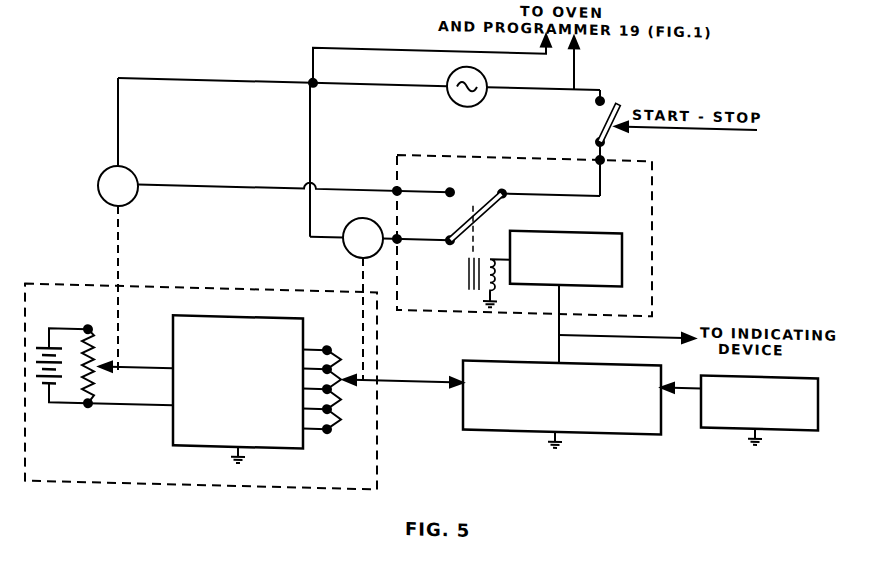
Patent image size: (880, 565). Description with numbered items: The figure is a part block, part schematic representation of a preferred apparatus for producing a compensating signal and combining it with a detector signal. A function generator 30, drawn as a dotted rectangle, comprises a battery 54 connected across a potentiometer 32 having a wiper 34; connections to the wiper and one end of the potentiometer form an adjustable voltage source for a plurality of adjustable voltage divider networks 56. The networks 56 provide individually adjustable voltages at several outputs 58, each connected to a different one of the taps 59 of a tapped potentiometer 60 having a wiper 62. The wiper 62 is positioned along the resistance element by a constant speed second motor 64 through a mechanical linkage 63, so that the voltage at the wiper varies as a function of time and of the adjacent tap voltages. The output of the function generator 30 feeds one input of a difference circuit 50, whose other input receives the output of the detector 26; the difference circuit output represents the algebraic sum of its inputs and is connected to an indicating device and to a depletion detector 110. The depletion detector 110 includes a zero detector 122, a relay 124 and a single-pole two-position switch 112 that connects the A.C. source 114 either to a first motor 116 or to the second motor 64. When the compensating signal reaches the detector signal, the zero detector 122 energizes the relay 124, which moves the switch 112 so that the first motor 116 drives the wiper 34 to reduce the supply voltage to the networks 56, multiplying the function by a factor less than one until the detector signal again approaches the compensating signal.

The first motor 116 is at (133, 182).
The A.C. source 114 is at (467, 106).
The single-pole two-position switch 112 is at (480, 180).
The second motor 64 is at (352, 224).
The mechanical linkage 63 is at (362, 290).
The zero detector 122 is at (573, 229).
The relay 124 is at (494, 293).
The depletion detector 110 is at (652, 236).
The battery 54 is at (45, 356).
The wiper 34 is at (116, 375).
The potentiometer 32 is at (92, 414).
The adjustable voltage divider networks 56 is at (222, 322).
The outputs 58 is at (318, 352).
The taps 59 is at (334, 402).
The tapped potentiometer 60 is at (314, 434).
The wiper 62 is at (372, 382).
The difference circuit 50 is at (467, 430).
The detector 26 is at (735, 422).
The function generator 30 is at (88, 491).